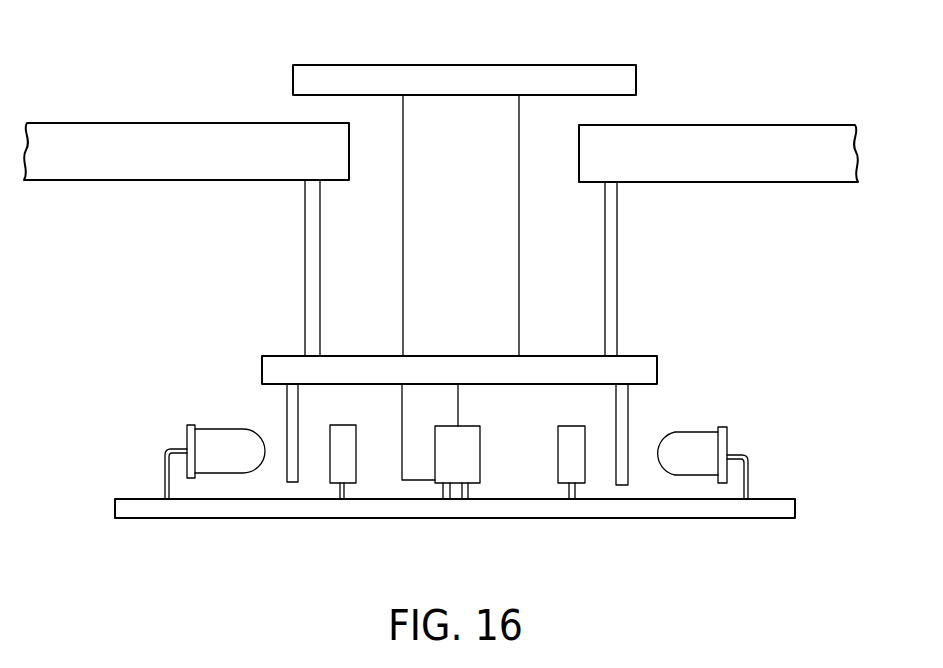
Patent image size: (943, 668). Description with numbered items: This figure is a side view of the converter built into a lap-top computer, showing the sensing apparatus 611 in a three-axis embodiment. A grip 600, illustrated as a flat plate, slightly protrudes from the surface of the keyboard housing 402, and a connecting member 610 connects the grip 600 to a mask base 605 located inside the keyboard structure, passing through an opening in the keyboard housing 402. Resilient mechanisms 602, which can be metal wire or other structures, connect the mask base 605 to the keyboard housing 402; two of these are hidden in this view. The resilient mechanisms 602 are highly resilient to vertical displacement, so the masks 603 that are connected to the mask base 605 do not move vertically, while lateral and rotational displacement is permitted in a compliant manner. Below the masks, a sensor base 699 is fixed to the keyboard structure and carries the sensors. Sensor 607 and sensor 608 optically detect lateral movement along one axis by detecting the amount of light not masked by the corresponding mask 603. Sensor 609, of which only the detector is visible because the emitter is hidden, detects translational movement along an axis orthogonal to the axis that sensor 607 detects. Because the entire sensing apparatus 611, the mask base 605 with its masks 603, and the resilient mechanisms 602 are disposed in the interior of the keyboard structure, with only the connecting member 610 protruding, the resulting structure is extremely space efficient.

The grip 600 is at (366, 65).
The connecting member 610 is at (485, 110).
The keyboard housing 402 is at (172, 122).
The resilient mechanisms 602 is at (305, 268).
The mask base 605 is at (652, 368).
The masks 603 is at (405, 468).
The sensor 607 is at (335, 445).
The sensor 608 is at (585, 443).
The sensor 609 is at (470, 468).
The sensor base 699 is at (237, 513).
The sensing apparatus 611 is at (95, 513).